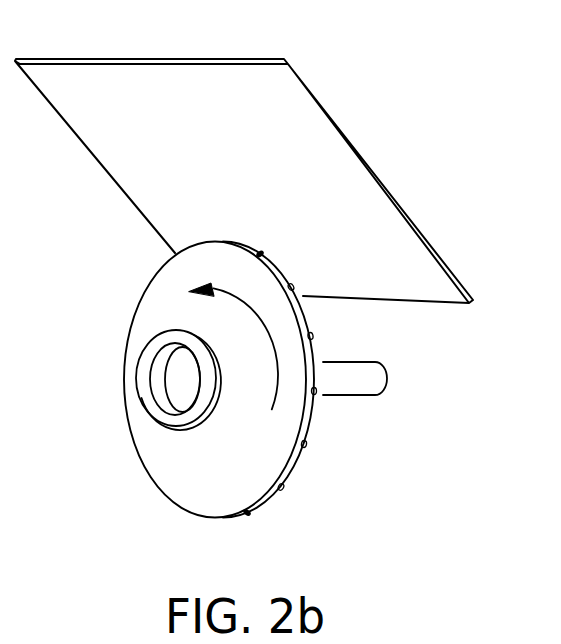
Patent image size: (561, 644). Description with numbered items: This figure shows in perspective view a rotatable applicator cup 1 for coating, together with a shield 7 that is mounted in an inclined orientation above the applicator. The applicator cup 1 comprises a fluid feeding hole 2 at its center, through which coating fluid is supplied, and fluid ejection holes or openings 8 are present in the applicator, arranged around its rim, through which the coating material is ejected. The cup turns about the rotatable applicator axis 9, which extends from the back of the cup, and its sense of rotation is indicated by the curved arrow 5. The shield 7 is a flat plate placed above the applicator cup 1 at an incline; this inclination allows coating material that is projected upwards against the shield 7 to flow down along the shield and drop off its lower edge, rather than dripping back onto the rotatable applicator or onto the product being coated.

The rotatable applicator cup 1 is at (235, 480).
The fluid feeding hole 2 is at (176, 379).
The sense of rotation 5 is at (247, 304).
The shield 7 is at (358, 182).
The fluid ejection holes or openings 8 is at (313, 335).
The rotatable applicator axis 9 is at (387, 388).